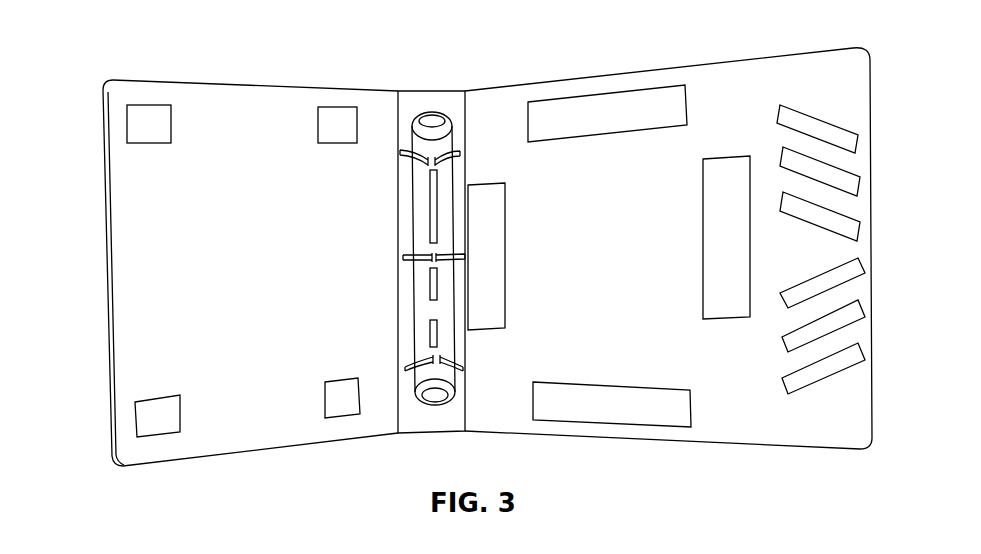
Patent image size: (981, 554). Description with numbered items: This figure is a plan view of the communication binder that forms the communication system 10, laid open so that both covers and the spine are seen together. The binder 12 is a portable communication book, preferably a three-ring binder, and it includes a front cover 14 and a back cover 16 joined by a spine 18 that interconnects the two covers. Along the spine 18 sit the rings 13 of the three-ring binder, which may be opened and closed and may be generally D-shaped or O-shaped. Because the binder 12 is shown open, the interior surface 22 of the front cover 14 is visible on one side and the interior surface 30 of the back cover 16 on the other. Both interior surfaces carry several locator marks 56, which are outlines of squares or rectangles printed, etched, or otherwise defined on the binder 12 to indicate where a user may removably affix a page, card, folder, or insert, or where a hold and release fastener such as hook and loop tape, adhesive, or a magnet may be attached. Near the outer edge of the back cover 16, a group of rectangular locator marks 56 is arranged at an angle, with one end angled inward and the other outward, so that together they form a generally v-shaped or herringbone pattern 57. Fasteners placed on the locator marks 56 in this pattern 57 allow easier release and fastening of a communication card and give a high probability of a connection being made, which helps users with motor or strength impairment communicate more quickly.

The communication system 10 is at (110, 34).
The binder 12 is at (115, 80).
The rings 13 is at (457, 152).
The front cover 14 is at (243, 86).
The back cover 16 is at (760, 58).
The spine 18 is at (428, 92).
The interior surface 22 is at (268, 277).
The interior surface 30 is at (630, 265).
The locator marks 56 is at (127, 124).
The herringbone pattern 57 is at (869, 112).